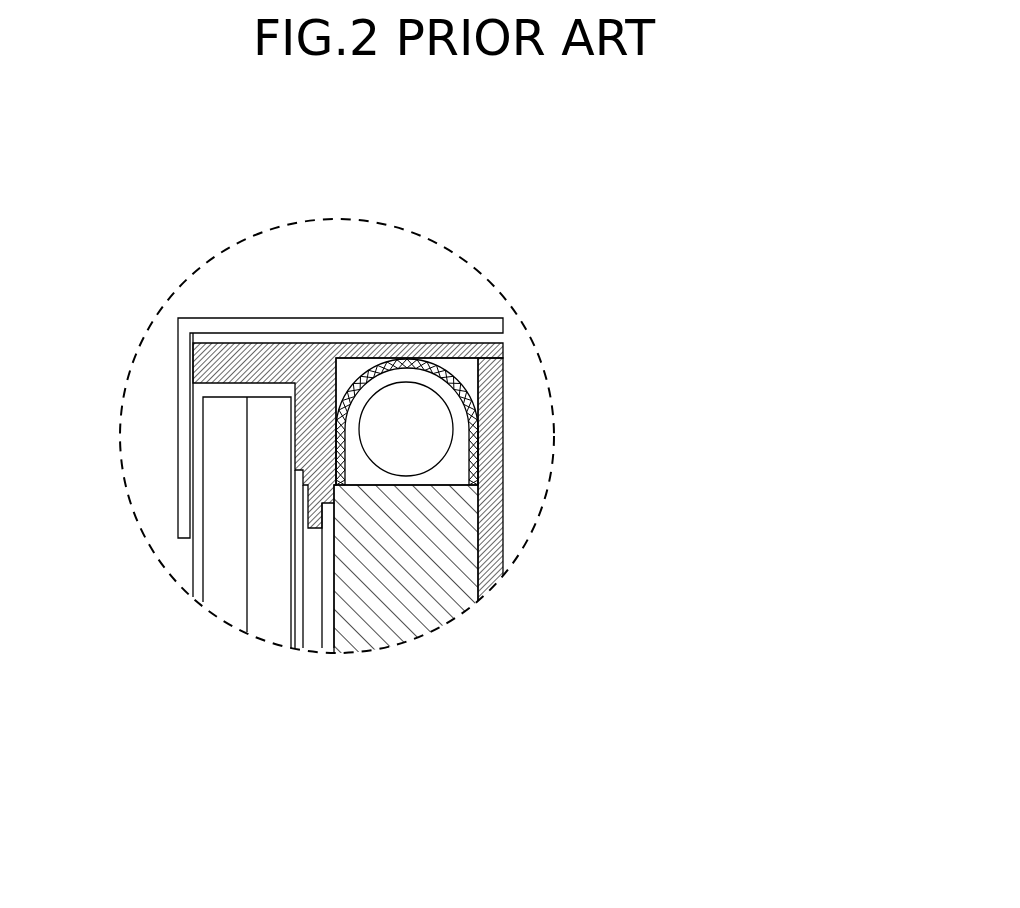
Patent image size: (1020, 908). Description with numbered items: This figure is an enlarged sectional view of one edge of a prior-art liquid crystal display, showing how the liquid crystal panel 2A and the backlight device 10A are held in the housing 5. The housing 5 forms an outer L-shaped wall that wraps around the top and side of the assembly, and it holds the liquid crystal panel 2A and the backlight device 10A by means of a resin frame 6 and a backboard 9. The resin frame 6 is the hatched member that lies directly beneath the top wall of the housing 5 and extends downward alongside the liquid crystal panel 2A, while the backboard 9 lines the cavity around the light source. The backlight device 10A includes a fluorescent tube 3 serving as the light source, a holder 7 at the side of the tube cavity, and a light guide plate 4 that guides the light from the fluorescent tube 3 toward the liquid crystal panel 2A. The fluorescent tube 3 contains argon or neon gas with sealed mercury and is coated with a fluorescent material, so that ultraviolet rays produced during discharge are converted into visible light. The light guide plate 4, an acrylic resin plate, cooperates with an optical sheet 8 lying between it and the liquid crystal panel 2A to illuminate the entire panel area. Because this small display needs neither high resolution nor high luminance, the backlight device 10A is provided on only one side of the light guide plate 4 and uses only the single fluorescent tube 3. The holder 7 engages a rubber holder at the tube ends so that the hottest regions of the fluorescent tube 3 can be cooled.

The housing 5 is at (217, 323).
The resin frame 6 is at (310, 348).
The backlight device 10A is at (418, 380).
The holder 7 is at (468, 380).
The backboard 9 is at (478, 480).
The fluorescent tube 3 is at (430, 445).
The light guide plate 4 is at (398, 603).
The liquid crystal panel 2A is at (270, 572).
The optical sheet 8 is at (325, 640).